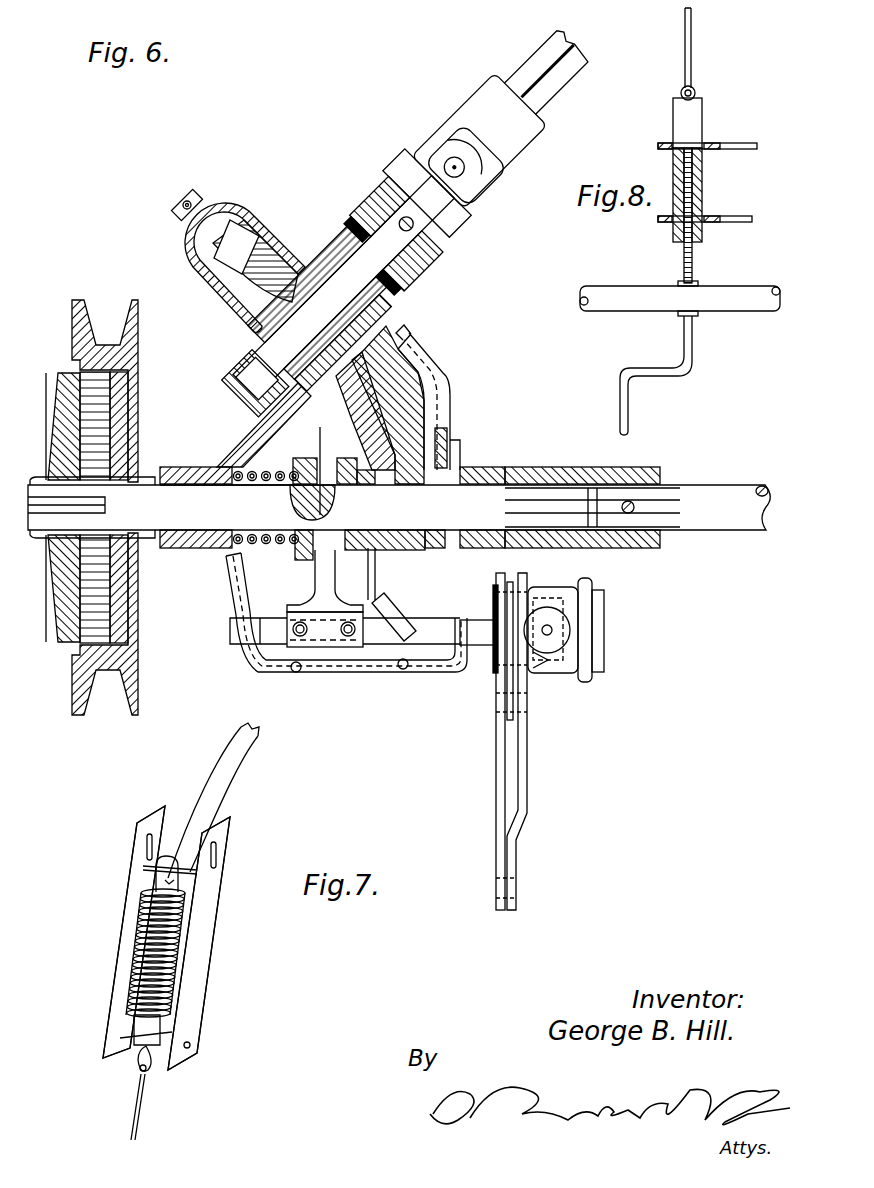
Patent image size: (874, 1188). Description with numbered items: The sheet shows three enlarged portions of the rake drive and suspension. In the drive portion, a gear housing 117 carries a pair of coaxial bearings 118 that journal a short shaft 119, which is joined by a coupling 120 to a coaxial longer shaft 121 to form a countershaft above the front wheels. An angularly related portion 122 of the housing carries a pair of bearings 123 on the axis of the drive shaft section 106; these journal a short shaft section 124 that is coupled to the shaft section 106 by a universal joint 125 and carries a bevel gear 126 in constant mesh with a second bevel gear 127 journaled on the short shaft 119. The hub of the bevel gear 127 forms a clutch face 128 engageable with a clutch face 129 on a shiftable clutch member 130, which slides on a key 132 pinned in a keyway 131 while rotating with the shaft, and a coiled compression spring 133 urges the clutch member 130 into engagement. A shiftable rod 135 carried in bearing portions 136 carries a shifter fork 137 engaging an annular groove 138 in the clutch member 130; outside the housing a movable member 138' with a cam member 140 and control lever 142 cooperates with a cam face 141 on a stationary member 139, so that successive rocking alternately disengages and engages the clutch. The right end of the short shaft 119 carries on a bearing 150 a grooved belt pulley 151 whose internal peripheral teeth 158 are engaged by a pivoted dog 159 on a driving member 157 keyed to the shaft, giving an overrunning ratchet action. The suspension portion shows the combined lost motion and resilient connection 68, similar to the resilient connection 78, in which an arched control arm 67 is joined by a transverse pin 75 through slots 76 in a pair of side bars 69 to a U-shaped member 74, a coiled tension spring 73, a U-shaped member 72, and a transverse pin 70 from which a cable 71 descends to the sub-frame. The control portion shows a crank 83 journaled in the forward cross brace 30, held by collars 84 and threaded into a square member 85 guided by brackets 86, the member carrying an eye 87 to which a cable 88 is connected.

In FIG. 6, the shaft section 106 is at (566, 78).
In FIG. 6, the angularly related portion 122 is at (260, 202).
In FIG. 6, the bearings 123 is at (347, 240).
In FIG. 6, the universal joint 125 is at (483, 210).
In FIG. 6, the bevel gear 126 is at (228, 248).
In FIG. 6, the short shaft section 124 is at (392, 284).
In FIG. 6, the grooved belt pulley 151 is at (134, 350).
In FIG. 6, the bearing 150 is at (128, 477).
In FIG. 6, the pivoted dog 159 is at (88, 460).
In FIG. 6, the short shaft 119 is at (178, 497).
In FIG. 6, the bearings 118 is at (198, 473).
In FIG. 6, the annular groove 138 is at (318, 443).
In FIG. 6, the bevel gear 127 is at (387, 427).
In FIG. 6, the clutch member 130 is at (292, 470).
In FIG. 6, the clutch face 129 is at (360, 462).
In FIG. 6, the gear housing 117 is at (447, 437).
In FIG. 6, the keyway 131 is at (275, 477).
In FIG. 6, the coupling 120 is at (592, 472).
In FIG. 6, the longer shaft 121 is at (722, 490).
In FIG. 6, the key 132 is at (290, 490).
In FIG. 6, the driving member 157 is at (56, 587).
In FIG. 6, the coiled compression spring 133 is at (276, 548).
In FIG. 6, the clutch face 128 is at (372, 566).
In FIG. 6, the shiftable rod 135 is at (470, 618).
In FIG. 6, the cam member 140 is at (540, 620).
In FIG. 6, the stationary member 139 is at (598, 622).
In FIG. 6, the peripheral spaced teeth 158 is at (77, 650).
In FIG. 6, the bearing portions 136 is at (278, 642).
In FIG. 6, the shifter fork 137 is at (328, 645).
In FIG. 6, the cam face 141 is at (540, 657).
In FIG. 6, the movable member 138' is at (466, 735).
In FIG. 6, the control lever 142 is at (527, 765).
In FIG. 8, the cable 88 is at (693, 42).
In FIG. 8, the eye 87 is at (703, 88).
In FIG. 8, the brackets 86 is at (735, 140).
In FIG. 8, the member 85 is at (698, 177).
In FIG. 8, the collars 84 is at (678, 280).
In FIG. 8, the forward cross brace 30 is at (757, 302).
In FIG. 8, the crank 83 is at (672, 385).
In FIG. 7, the control arm 67 is at (244, 772).
In FIG. 7, the combined lost motion and resilient connection 68 is at (222, 967).
In FIG. 7, the resilient connection 78 is at (203, 932).
In FIG. 7, the slots 76 is at (143, 843).
In FIG. 7, the transverse pin 75 is at (145, 864).
In FIG. 7, the U-shaped member 74 is at (147, 878).
In FIG. 7, the side bars 69 is at (120, 937).
In FIG. 7, the coiled tension spring 73 is at (130, 993).
In FIG. 7, the U-shaped member 72 is at (130, 1025).
In FIG. 7, the transverse pin 70 is at (152, 1053).
In FIG. 7, the cable 71 is at (133, 1110).